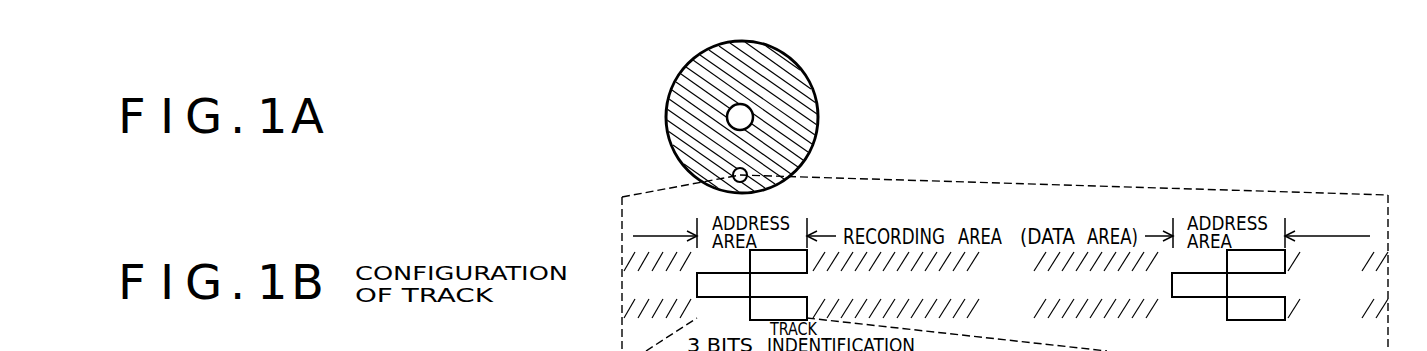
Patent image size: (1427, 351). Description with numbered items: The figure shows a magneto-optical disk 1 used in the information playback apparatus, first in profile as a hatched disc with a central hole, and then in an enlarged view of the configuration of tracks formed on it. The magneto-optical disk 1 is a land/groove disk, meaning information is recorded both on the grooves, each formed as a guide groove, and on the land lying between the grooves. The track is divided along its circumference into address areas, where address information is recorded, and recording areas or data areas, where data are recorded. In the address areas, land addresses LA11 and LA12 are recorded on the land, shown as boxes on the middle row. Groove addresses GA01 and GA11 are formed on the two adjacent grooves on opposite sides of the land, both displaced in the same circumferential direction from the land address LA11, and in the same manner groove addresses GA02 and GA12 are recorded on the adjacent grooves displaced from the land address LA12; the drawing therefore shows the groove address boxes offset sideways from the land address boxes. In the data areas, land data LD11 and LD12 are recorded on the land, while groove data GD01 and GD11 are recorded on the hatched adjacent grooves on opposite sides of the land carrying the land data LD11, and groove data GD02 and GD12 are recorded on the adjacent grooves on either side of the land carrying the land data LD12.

In FIG. 1A, the magneto-optical disk 1 is at (815, 103).
In FIG. 1B, the groove address GA01 is at (778, 261).
In FIG. 1B, the land address LA11 is at (723, 284).
In FIG. 1B, the groove address GA11 is at (778, 308).
In FIG. 1B, the groove address GA02 is at (1256, 261).
In FIG. 1B, the land address LA12 is at (1199, 284).
In FIG. 1B, the groove address GA12 is at (1256, 308).
In FIG. 1B, the groove data GD01 is at (891, 263).
In FIG. 1B, the land data LD11 is at (1006, 288).
In FIG. 1B, the groove data GD11 is at (891, 310).
In FIG. 1B, the groove data GD02 is at (1338, 263).
In FIG. 1B, the land data LD12 is at (1335, 288).
In FIG. 1B, the groove data GD12 is at (1338, 310).